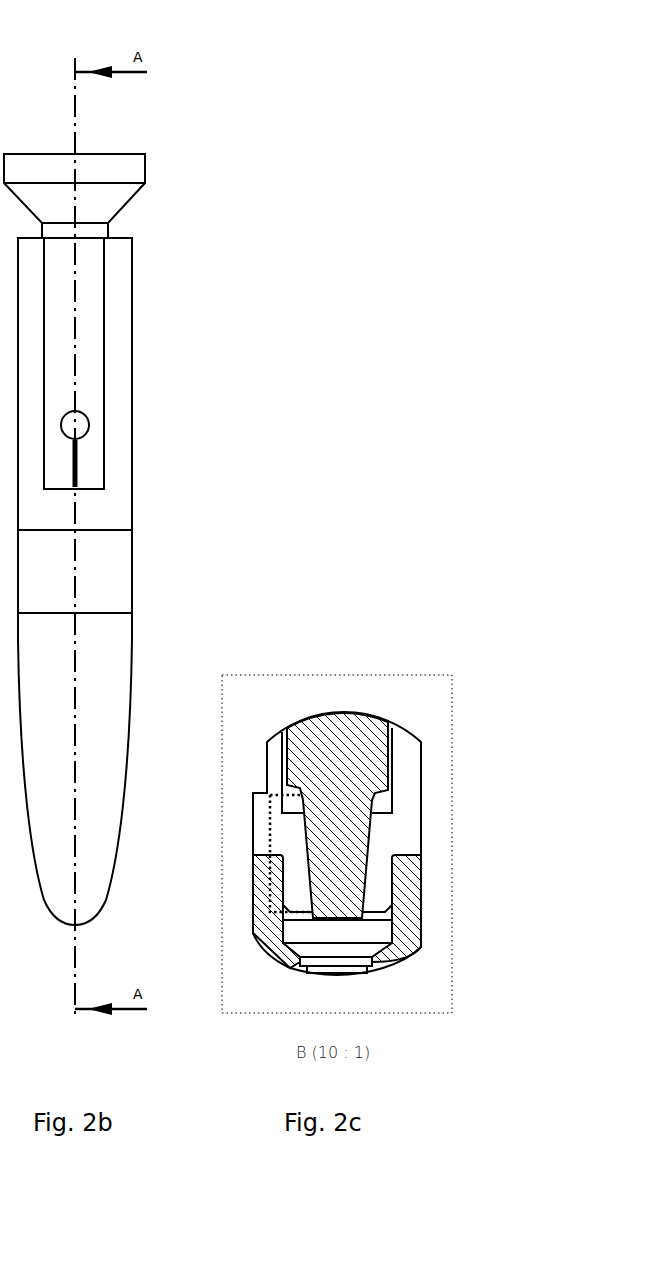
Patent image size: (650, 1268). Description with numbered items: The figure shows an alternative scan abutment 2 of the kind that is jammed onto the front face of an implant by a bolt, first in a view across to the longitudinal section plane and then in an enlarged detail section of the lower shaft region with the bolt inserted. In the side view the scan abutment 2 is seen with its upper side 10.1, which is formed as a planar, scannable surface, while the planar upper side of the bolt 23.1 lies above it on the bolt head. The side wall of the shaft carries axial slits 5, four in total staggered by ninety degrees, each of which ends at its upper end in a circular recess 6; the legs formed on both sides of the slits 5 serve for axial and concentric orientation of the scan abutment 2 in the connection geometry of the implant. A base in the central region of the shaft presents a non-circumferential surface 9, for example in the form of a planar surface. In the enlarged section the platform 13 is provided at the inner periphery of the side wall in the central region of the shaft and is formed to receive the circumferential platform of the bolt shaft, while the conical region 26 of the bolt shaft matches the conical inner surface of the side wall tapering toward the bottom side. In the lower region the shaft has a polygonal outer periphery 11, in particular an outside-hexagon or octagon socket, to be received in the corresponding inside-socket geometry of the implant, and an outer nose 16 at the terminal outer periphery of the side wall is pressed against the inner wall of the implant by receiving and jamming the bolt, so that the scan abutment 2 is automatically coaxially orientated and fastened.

In FIG. 2B, the upper side of the bolt 23.1 is at (116, 148).
In FIG. 2B, the upper side of the scan abutment 10.1 is at (123, 222).
In FIG. 2B, the scan abutment 2 is at (120, 300).
In FIG. 2B, the circular recess 6 is at (84, 428).
In FIG. 2B, the axial slit 5 is at (80, 470).
In FIG. 2C, the non-circumferential surface 9 is at (255, 772).
In FIG. 2C, the platform 13 is at (385, 803).
In FIG. 2C, the conical region of the bolt shaft 26 is at (262, 856).
In FIG. 2C, the polygonal outer periphery 11 is at (397, 872).
In FIG. 2C, the outer nose 16 is at (397, 902).